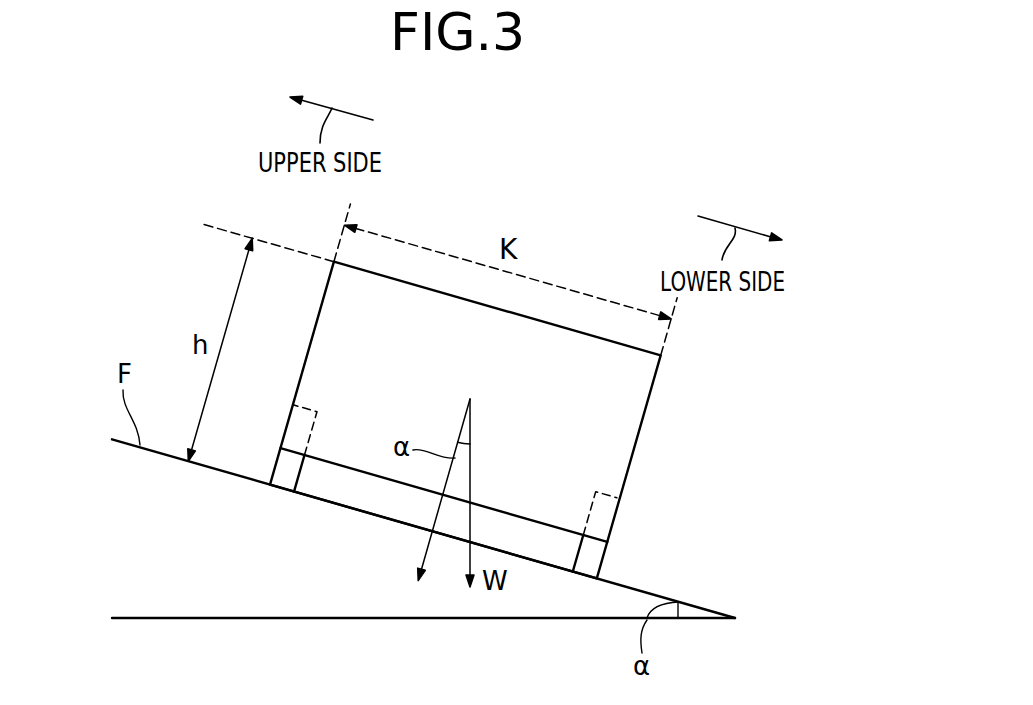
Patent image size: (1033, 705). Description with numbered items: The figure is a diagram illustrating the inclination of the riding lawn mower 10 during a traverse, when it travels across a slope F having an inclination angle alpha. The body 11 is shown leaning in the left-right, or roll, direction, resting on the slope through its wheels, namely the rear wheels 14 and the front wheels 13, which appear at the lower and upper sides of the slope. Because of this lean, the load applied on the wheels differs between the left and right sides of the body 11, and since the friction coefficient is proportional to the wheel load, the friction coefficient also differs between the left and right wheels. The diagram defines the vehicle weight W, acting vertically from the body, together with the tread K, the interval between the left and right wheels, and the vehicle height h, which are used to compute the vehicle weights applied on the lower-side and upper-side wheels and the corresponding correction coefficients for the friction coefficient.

The riding lawn mower 10 is at (532, 194).
The body 11 is at (628, 402).
The front wheel 13 is at (481, 477).
The rear wheel 14 is at (288, 472).